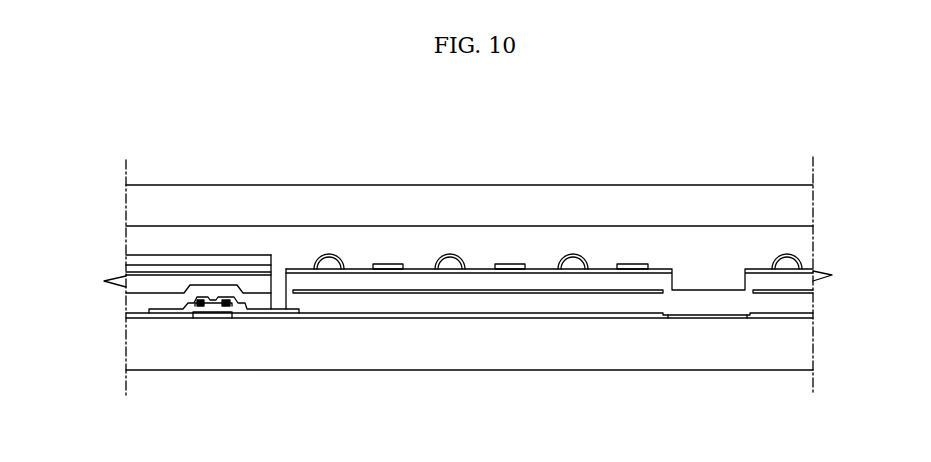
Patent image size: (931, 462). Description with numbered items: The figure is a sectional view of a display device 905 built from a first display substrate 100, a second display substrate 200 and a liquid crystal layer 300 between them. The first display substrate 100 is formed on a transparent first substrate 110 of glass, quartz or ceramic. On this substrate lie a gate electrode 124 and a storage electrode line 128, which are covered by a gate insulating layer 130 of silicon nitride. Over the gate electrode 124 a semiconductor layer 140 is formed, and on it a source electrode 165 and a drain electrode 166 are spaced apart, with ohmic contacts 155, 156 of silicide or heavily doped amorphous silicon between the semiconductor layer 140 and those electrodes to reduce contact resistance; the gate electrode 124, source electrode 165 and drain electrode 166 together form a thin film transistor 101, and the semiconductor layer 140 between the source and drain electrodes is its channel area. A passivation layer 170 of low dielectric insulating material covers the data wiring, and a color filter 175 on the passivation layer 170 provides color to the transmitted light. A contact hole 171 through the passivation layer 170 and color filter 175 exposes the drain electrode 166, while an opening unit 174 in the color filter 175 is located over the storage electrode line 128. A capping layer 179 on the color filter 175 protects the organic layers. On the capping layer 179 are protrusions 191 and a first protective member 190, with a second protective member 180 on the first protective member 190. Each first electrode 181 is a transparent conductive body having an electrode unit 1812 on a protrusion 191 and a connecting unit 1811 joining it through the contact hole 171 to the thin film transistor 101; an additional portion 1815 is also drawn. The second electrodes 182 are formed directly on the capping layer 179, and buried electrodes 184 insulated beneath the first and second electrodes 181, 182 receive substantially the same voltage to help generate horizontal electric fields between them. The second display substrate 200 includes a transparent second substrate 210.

The first display substrate 100 is at (140, 417).
The thin film transistor 101 is at (160, 399).
The first substrate 110 is at (652, 360).
The gate electrode 124 is at (208, 317).
The storage electrode line 128 is at (708, 318).
The gate insulating layer 130 is at (355, 316).
The semiconductor layer 140 is at (217, 304).
The ohmic contact 155 is at (200, 306).
The ohmic contact 156 is at (226, 306).
The source electrode 165 is at (178, 311).
The drain electrode 166 is at (264, 311).
The passivation layer 170 is at (126, 306).
The contact hole 171 is at (279, 286).
The opening unit 174 is at (687, 282).
The color filter 175 is at (126, 293).
The capping layer 179 is at (258, 255).
The second protective member 180 is at (191, 255).
The first electrode 181 is at (313, 152).
The connecting unit 1811 is at (300, 265).
The electrode unit 1812 is at (332, 253).
The connection electrode 1815 is at (700, 289).
The second electrode 182 is at (393, 264).
The buried electrode 184 is at (592, 300).
The first protective member 190 is at (126, 265).
The protrusion 191 is at (341, 259).
The second display substrate 200 is at (143, 161).
The second substrate 210 is at (236, 196).
The liquid crystal layer 300 is at (134, 237).
The display device 905 is at (535, 127).